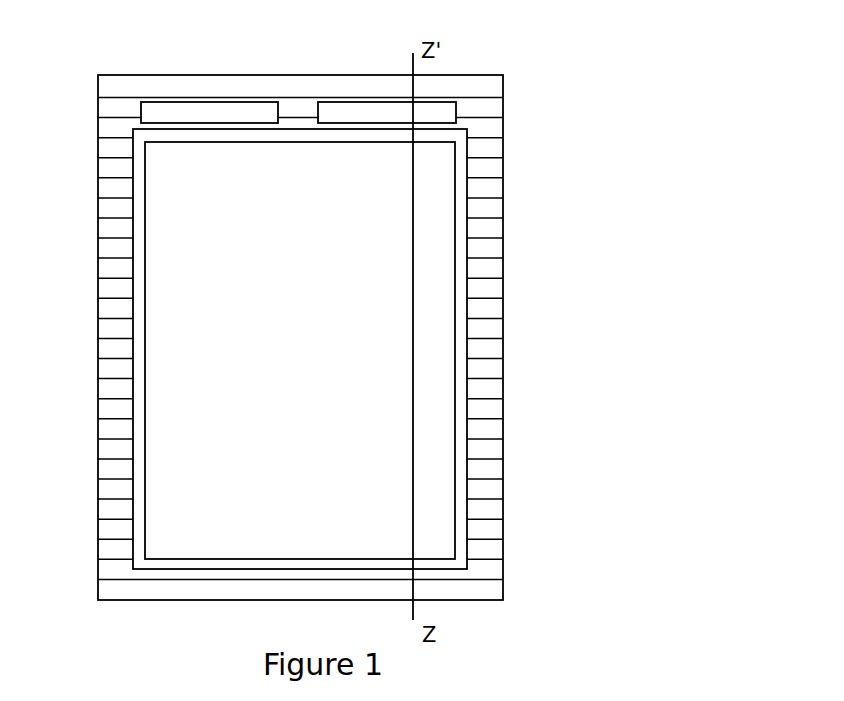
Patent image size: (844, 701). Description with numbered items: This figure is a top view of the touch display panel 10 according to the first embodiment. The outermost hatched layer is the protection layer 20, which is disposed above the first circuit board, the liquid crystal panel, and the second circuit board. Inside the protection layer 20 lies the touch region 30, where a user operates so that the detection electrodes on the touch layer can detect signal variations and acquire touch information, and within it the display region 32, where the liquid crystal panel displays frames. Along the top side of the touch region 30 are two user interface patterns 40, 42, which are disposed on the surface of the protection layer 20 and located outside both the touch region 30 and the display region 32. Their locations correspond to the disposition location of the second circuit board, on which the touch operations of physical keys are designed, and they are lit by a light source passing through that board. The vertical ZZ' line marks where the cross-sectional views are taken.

The touch display panel 10 is at (825, 72).
The protection layer 20 is at (483, 551).
The touch region 30 is at (460, 208).
The display region 32 is at (430, 327).
The user interface pattern 40 is at (450, 113).
The user interface pattern 42 is at (148, 113).